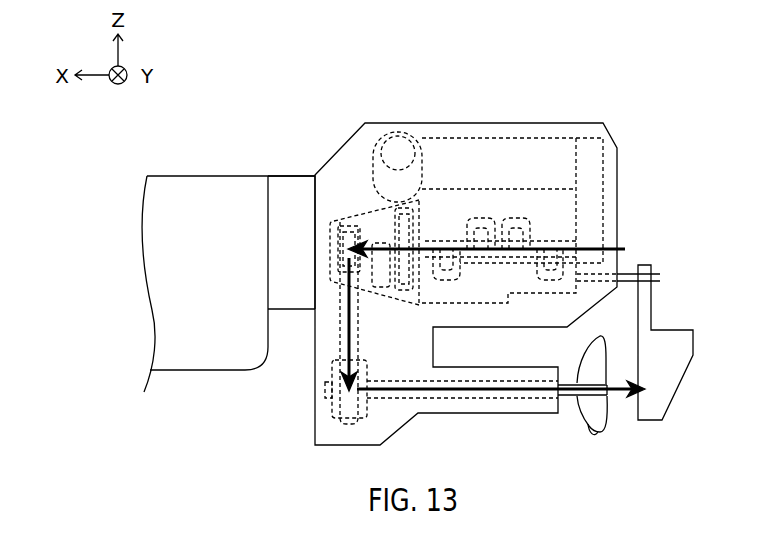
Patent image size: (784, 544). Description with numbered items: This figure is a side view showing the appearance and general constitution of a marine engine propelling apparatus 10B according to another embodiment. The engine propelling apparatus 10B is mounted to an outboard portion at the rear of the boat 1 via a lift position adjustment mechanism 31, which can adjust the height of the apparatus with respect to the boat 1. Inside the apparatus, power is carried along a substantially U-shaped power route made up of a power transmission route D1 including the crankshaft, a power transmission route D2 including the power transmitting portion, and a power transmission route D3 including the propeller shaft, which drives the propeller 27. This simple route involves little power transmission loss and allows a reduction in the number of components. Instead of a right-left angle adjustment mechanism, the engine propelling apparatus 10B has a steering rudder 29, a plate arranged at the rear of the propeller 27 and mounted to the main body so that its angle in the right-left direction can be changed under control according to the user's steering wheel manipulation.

The boat 1 is at (182, 172).
The lift position adjustment mechanism 31 is at (290, 171).
The engine propelling apparatus 10B is at (530, 112).
The steering rudder 29 is at (678, 323).
The propeller 27 is at (582, 424).
The power transmission route D1 is at (593, 246).
The power transmission route D2 is at (353, 333).
The power transmission route D3 is at (487, 395).